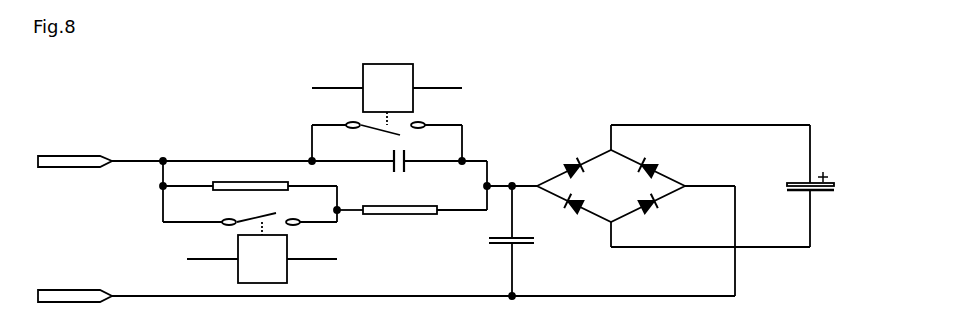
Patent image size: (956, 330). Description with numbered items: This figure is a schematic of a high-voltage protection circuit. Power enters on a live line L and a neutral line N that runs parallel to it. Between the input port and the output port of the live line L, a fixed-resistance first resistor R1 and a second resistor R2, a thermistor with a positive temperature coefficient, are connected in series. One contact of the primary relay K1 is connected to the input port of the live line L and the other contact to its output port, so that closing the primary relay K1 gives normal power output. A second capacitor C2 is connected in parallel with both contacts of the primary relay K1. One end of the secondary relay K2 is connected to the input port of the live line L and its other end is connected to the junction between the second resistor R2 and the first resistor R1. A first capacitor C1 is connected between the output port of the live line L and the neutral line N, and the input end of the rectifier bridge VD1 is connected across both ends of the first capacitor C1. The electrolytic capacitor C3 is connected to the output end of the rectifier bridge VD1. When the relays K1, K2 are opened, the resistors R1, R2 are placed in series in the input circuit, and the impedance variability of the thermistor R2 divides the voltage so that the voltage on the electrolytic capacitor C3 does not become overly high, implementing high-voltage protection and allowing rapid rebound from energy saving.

The live line L is at (75, 148).
The neutral line N is at (75, 283).
The primary relay K1 is at (387, 112).
The secondary relay K2 is at (250, 248).
The first resistor R1 is at (412, 212).
The second resistor R2 is at (250, 202).
The first capacitor C1 is at (526, 241).
The second capacitor C2 is at (398, 172).
The electrolytic capacitor C3 is at (722, 186).
The rectifier bridge VD1 is at (613, 186).